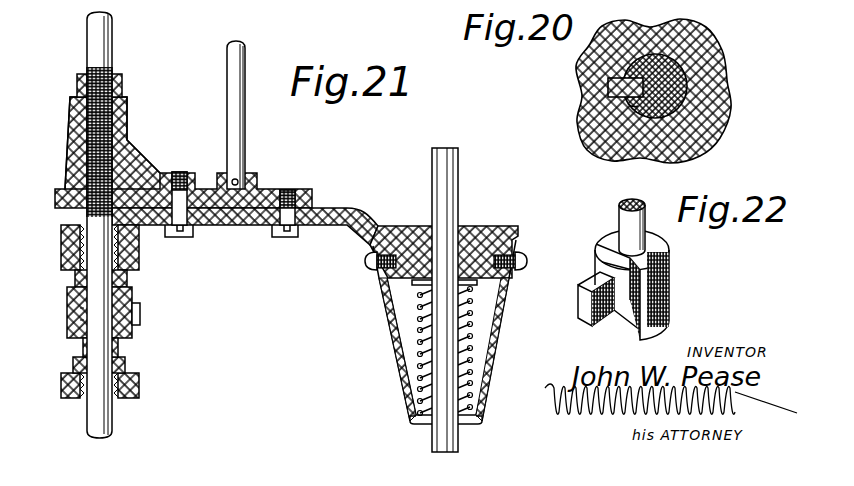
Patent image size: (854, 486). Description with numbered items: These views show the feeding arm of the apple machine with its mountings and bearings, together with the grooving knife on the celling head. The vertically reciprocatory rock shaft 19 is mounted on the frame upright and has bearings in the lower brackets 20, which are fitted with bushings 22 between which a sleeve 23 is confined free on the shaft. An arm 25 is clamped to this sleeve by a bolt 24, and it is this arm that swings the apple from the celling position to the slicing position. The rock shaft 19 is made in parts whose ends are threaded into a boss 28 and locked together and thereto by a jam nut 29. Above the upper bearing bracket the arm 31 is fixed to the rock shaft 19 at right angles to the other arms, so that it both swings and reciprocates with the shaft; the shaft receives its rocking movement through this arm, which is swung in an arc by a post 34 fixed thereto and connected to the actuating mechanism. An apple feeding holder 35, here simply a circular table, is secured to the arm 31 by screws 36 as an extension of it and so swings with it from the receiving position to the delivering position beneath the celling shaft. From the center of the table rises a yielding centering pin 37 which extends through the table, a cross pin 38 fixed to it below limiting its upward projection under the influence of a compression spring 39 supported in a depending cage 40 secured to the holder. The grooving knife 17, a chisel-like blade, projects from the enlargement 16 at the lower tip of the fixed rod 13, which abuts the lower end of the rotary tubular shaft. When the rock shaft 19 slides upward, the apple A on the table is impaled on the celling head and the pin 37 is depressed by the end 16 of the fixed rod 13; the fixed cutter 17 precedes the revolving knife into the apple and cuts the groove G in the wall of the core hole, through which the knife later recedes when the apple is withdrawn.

In FIG. 22, the fixed rod 13 is at (640, 240).
In FIG. 20, the enlargement 16 is at (690, 73).
In FIG. 22, the enlargement 16 is at (669, 280).
In FIG. 20, the grooving knife 17 is at (615, 88).
In FIG. 22, the grooving knife 17 is at (590, 317).
In FIG. 20, the apple A is at (713, 53).
In FIG. 20, the groove G is at (631, 105).
In FIG. 21, the rock shaft 19 is at (110, 48).
In FIG. 21, the lower brackets 20 is at (131, 268).
In FIG. 21, the bushings 22 is at (74, 279).
In FIG. 21, the sleeve 23 is at (118, 352).
In FIG. 21, the bolt 24 is at (140, 306).
In FIG. 21, the arm 25 is at (131, 335).
In FIG. 21, the boss 28 is at (127, 128).
In FIG. 21, the jam nut 29 is at (123, 86).
In FIG. 21, the arm 31 is at (265, 190).
In FIG. 21, the post 34 is at (242, 67).
In FIG. 21, the apple feeding holder 35 is at (403, 225).
In FIG. 21, the screws 36 is at (275, 236).
In FIG. 21, the centering pin 37 is at (458, 182).
In FIG. 21, the cross pin 38 is at (472, 284).
In FIG. 21, the compression spring 39 is at (421, 325).
In FIG. 21, the cage 40 is at (490, 354).